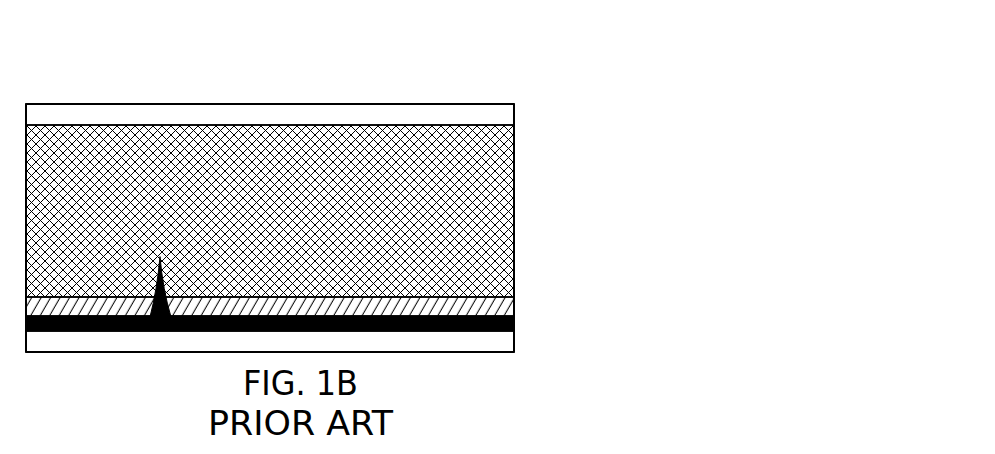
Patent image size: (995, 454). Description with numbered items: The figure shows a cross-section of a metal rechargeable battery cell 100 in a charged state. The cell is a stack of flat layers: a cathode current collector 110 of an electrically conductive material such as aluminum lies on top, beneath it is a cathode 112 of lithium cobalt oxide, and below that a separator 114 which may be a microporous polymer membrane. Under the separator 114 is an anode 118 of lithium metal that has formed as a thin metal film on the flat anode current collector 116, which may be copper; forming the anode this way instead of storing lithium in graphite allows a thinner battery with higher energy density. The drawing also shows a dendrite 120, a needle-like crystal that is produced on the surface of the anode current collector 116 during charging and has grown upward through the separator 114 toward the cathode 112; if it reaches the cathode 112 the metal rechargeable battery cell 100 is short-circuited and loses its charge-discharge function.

The metal rechargeable battery cell 100 is at (147, 52).
The cathode current collector 110 is at (514, 104).
The cathode 112 is at (514, 179).
The separator 114 is at (514, 302).
The anode current collector 116 is at (514, 352).
The anode 118 is at (514, 321).
The dendrite 120 is at (166, 270).